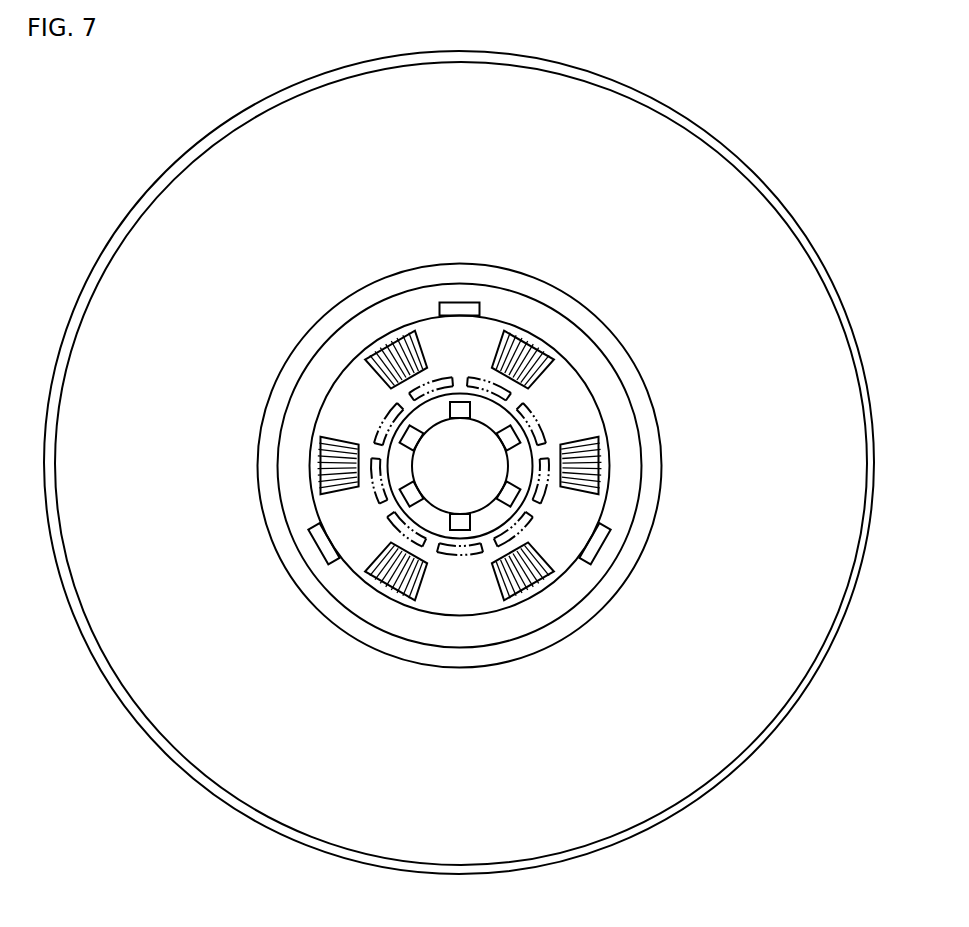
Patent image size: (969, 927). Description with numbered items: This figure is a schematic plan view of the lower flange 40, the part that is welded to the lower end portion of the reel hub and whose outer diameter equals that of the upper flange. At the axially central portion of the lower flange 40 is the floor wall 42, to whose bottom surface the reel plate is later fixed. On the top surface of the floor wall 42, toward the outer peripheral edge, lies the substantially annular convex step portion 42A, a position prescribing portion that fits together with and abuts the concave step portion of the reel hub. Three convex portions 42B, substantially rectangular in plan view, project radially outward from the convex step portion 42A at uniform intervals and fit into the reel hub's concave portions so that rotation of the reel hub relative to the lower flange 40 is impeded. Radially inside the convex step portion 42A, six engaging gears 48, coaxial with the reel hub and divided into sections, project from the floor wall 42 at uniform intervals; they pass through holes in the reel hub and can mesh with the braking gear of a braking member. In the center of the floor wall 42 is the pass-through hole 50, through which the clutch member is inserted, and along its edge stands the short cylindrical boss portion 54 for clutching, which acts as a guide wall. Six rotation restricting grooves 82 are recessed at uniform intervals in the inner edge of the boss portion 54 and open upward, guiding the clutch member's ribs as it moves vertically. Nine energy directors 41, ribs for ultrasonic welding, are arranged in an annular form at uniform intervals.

The lower flange 40 is at (722, 180).
The energy directors 41 is at (470, 560).
The floor wall 42 is at (532, 325).
The convex step portion 42A is at (327, 390).
The convex portions 42B is at (467, 301).
The engaging gears 48 is at (395, 348).
The pass-through hole 50 is at (405, 462).
The boss portion for clutching 54 is at (525, 503).
The rotation restricting grooves 82 is at (470, 413).